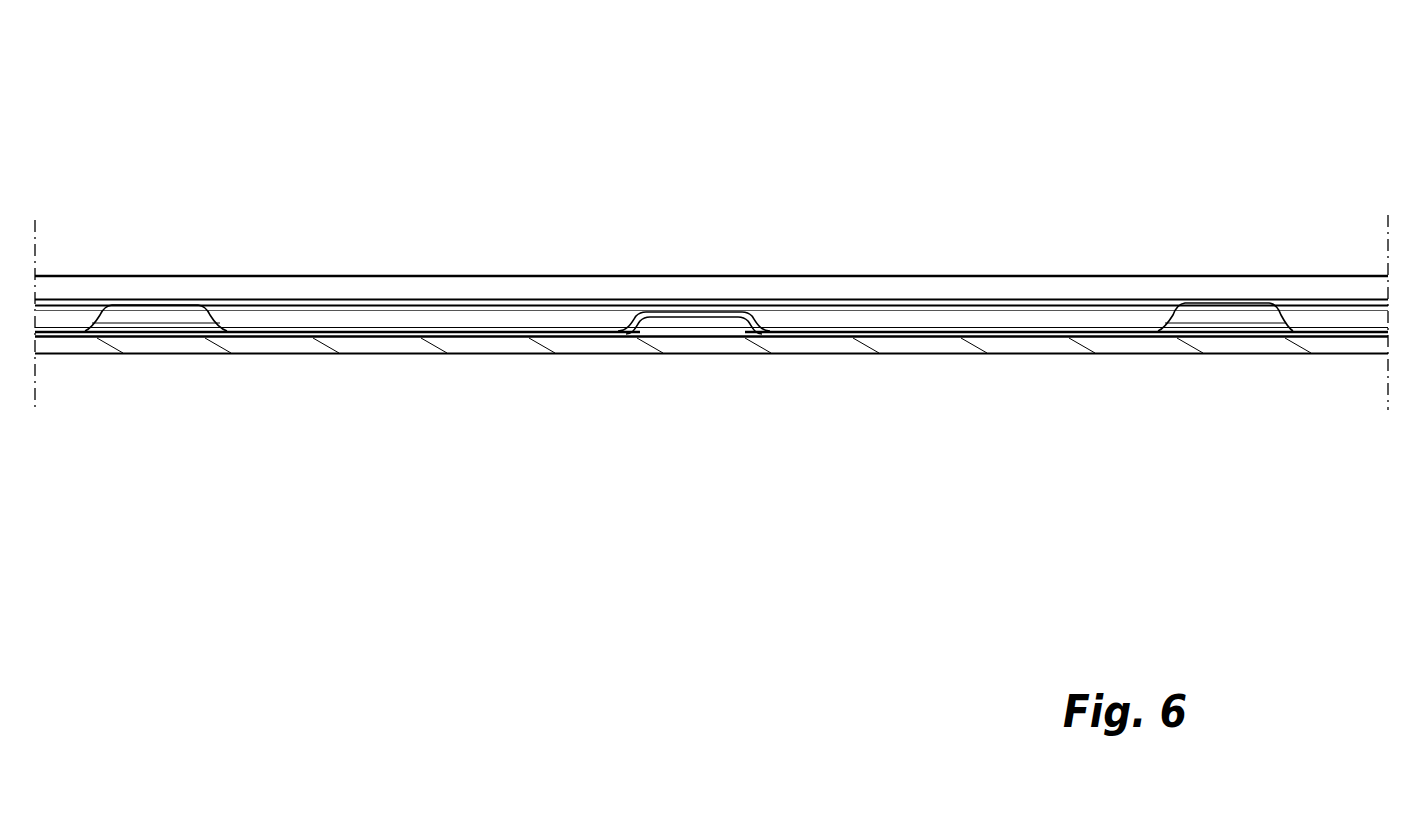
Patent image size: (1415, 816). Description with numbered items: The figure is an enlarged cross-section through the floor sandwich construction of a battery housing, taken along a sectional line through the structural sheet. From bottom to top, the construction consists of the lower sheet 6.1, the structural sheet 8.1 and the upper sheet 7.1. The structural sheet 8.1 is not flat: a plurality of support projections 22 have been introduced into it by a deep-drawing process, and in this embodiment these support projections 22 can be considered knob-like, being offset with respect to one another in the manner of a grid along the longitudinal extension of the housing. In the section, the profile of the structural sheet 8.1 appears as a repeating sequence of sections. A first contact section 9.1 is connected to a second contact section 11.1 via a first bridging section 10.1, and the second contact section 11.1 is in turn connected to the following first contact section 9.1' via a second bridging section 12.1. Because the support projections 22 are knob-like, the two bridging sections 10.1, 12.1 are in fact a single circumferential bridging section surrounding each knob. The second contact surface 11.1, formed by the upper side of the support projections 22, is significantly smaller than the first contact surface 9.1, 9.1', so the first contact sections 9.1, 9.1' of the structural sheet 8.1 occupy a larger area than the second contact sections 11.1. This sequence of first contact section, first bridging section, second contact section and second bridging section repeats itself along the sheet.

The lower sheet 6.1 is at (820, 342).
The upper sheet 7.1 is at (1027, 300).
The structural sheet 8.1 is at (1148, 320).
The first contact section 9.1 is at (711, 415).
The first contact section 9.1' is at (711, 458).
The first bridging section 10.1 is at (637, 308).
The second contact section 11.1 is at (132, 298).
The second bridging section 12.1 is at (747, 308).
The support projections 22 is at (158, 318).